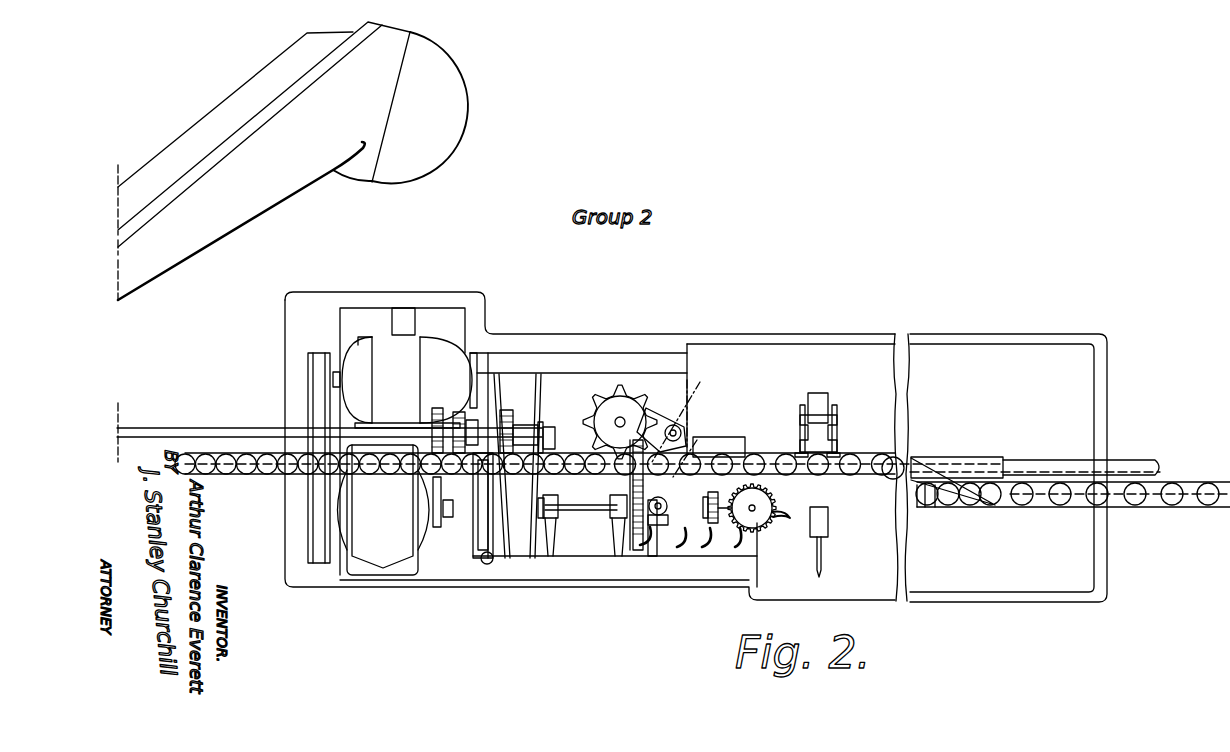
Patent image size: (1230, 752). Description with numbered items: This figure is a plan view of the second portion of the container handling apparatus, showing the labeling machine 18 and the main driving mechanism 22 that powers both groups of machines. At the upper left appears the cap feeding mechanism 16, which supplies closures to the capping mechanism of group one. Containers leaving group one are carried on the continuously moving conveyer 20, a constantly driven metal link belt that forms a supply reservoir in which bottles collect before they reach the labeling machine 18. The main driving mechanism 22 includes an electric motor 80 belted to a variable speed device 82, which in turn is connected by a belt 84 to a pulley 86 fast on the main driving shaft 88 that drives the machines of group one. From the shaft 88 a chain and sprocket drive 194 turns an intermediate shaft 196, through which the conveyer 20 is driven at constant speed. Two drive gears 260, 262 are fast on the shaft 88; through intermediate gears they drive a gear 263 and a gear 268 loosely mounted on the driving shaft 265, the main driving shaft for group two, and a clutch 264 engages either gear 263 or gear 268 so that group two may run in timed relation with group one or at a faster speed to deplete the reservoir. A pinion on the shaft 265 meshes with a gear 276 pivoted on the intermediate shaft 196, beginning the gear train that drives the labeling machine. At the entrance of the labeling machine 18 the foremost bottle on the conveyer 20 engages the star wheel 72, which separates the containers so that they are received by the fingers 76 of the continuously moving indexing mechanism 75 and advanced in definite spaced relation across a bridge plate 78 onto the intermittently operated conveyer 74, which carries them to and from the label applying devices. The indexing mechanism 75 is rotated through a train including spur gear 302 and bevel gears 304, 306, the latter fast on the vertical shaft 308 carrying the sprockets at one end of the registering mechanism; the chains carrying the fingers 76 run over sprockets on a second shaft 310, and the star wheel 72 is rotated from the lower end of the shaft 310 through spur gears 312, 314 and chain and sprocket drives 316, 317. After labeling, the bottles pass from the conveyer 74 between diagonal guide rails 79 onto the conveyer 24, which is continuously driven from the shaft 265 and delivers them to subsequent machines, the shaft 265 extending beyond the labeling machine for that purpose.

The cap feeding mechanism 16 is at (207, 113).
The labeling machine 18 is at (767, 367).
The continuously moving conveyer 20 is at (218, 477).
The main driving mechanism 22 is at (436, 323).
The conveyer 24 is at (1133, 510).
The star wheel 72 is at (618, 388).
The intermittently operated conveyer 74 is at (853, 457).
The indexing mechanism 75 is at (667, 547).
The fingers 76 is at (682, 537).
The bridge plate 78 is at (692, 453).
The diagonal guide rails 79 is at (957, 473).
The electric motor 80 is at (358, 350).
The variable speed device 82 is at (378, 540).
The belt 84 is at (440, 483).
The pulley 86 is at (453, 412).
The main driving shaft 88 is at (215, 427).
The chain and sprocket drive 194 is at (552, 493).
The intermediate shaft 196 is at (578, 518).
The drive gear 260 is at (465, 413).
The drive gear 262 is at (507, 380).
The gear 263 is at (437, 507).
The clutch 264 is at (485, 490).
The driving shaft 265 is at (1130, 465).
The gear 268 is at (550, 547).
The gear 276 is at (645, 556).
The spur gear 302 is at (702, 532).
The bevel gear 304 is at (757, 503).
The bevel gear 306 is at (758, 528).
The vertical shaft 308 is at (755, 510).
The second shaft 310 is at (632, 552).
The spur gear 312 is at (668, 514).
The spur gear 314 is at (668, 503).
The chain and sprocket drive 316 is at (690, 447).
The chain and sprocket drive 317 is at (680, 400).